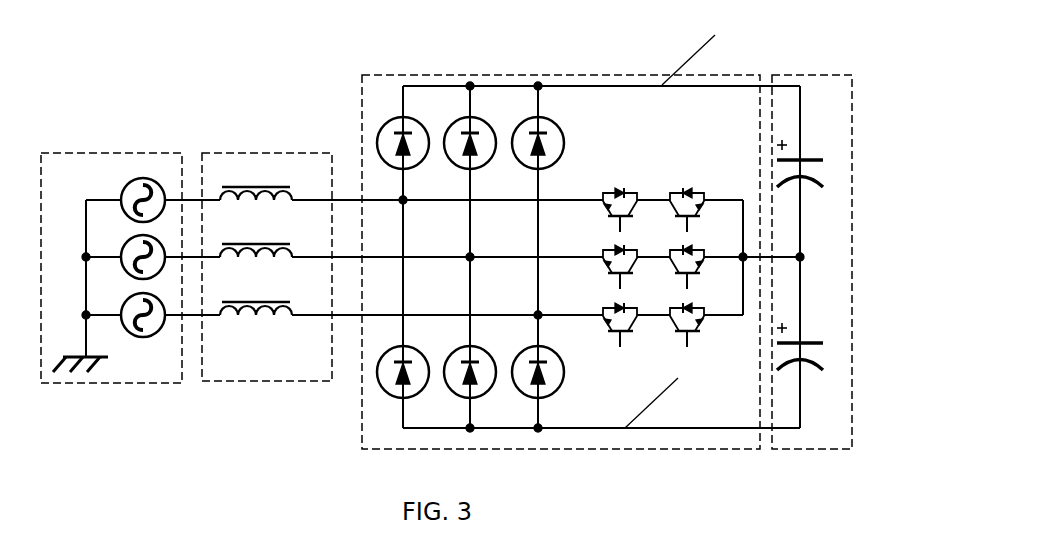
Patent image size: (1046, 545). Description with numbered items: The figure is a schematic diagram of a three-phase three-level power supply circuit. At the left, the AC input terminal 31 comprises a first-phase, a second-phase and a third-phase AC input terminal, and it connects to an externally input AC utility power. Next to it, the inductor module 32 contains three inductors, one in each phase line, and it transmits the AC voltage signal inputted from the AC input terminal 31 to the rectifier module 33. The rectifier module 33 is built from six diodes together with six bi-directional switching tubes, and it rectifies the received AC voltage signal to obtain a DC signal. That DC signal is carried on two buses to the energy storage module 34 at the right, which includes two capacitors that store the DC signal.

The AC input terminal 31 is at (113, 153).
The inductor module 32 is at (267, 153).
The rectifier module 33 is at (550, 73).
The energy storage module 34 is at (802, 73).